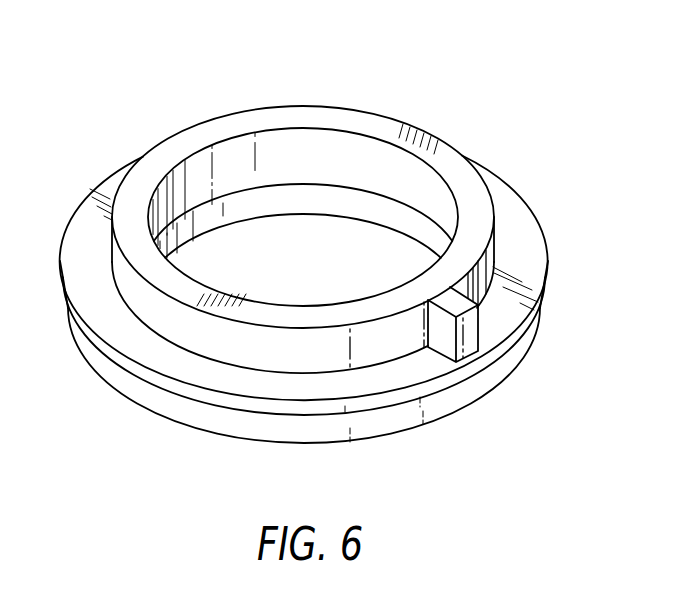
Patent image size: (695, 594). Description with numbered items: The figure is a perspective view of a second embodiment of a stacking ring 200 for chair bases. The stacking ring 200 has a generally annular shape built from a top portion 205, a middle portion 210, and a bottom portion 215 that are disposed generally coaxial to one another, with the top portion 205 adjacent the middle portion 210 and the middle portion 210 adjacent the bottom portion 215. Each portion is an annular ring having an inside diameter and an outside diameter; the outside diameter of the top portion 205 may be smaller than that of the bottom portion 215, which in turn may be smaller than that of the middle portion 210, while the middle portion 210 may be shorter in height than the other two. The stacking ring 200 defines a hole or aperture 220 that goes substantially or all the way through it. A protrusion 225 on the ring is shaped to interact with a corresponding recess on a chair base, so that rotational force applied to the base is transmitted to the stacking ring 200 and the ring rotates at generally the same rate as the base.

The stacking ring 200 is at (93, 116).
The top portion 205 is at (494, 264).
The middle portion 210 is at (528, 327).
The bottom portion 215 is at (445, 403).
The hole or aperture 220 is at (331, 238).
The protrusion 225 is at (470, 340).